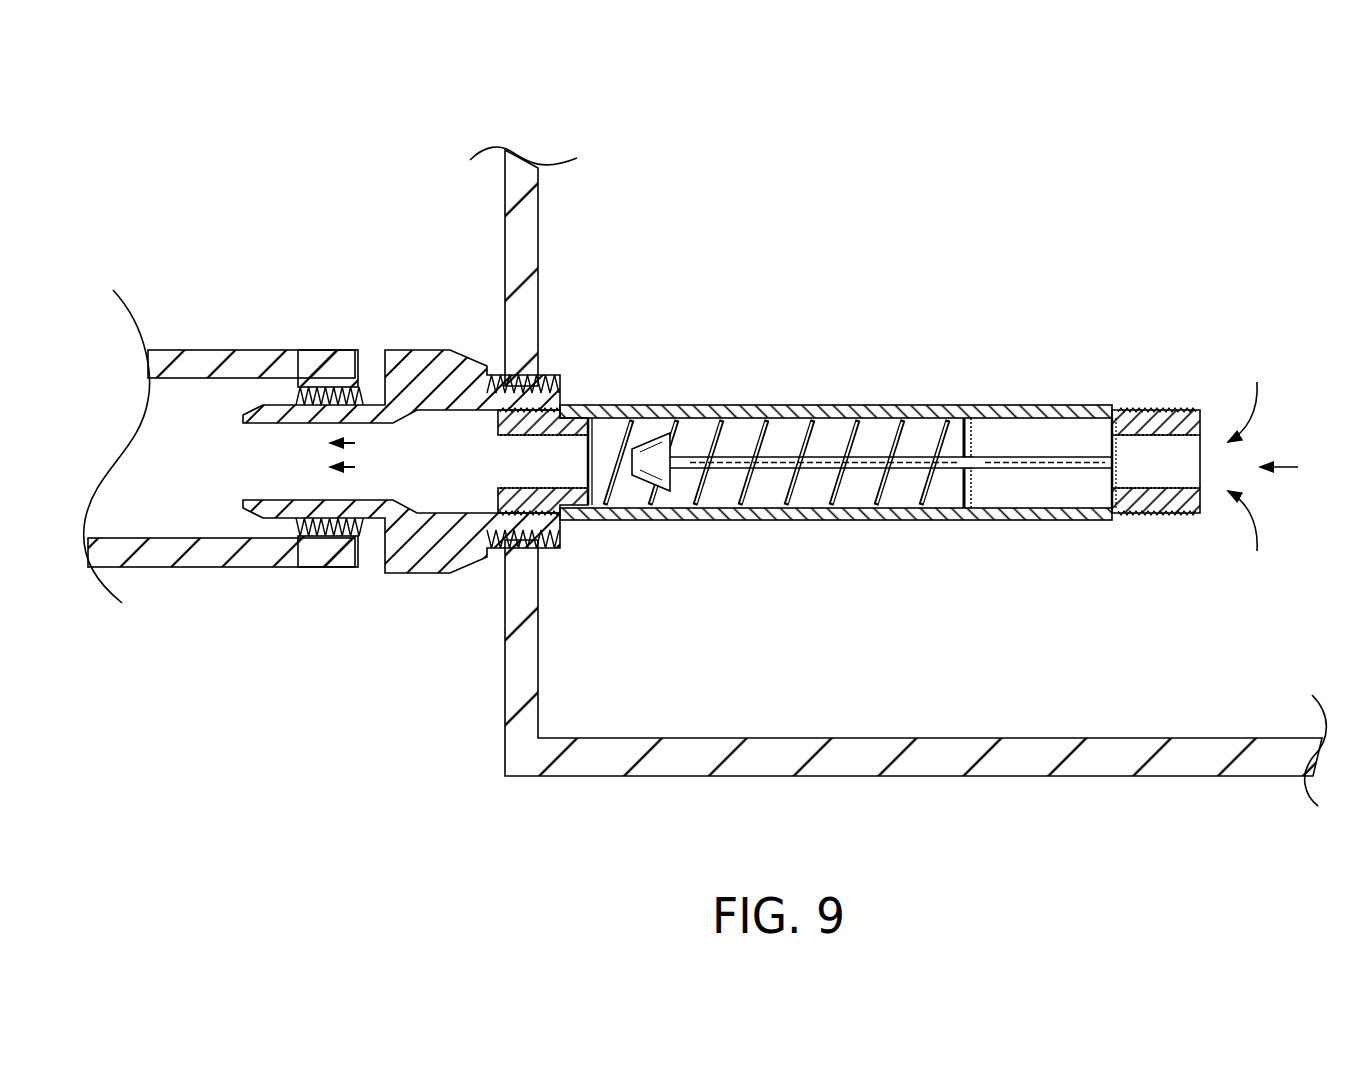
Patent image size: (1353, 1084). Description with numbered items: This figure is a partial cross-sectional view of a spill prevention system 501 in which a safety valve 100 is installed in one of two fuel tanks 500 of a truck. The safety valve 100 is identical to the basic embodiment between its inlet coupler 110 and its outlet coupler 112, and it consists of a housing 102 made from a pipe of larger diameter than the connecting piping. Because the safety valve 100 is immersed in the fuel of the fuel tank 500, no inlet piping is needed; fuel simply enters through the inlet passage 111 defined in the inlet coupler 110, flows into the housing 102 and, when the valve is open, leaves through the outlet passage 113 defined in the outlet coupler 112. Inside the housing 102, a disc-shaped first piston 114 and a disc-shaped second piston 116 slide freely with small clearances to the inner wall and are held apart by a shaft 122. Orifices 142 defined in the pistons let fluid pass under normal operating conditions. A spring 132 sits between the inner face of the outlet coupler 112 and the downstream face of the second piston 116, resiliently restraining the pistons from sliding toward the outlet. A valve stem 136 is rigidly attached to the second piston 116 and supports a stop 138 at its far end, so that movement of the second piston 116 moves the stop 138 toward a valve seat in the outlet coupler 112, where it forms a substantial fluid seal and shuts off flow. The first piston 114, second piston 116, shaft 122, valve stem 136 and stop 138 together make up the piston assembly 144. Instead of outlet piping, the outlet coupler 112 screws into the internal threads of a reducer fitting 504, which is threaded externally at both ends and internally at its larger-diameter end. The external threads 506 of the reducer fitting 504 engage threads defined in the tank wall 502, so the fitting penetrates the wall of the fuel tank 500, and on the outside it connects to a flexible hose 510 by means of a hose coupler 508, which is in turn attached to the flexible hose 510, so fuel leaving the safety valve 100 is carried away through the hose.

The safety valve 100 is at (901, 386).
The housing 102 is at (950, 408).
The inlet coupler 110 is at (1162, 418).
The inlet passage 111 is at (1154, 478).
The outlet coupler 112 is at (573, 415).
The outlet passage 113 is at (560, 473).
The first piston 114 is at (1118, 466).
The second piston 116 is at (977, 495).
The shaft 122 is at (983, 458).
The spring 132 is at (848, 440).
The valve stem 136 is at (753, 455).
The stop 138 is at (679, 434).
The orifices 142 is at (973, 482).
The piston assembly 144 is at (1065, 436).
The fuel tank 500 is at (523, 240).
The spill prevention system 501 is at (317, 196).
The tank wall 502 is at (512, 187).
The reducer fitting 504 is at (450, 358).
The fitting threads 506 is at (541, 386).
The hose coupler 508 is at (337, 357).
The flexible hose 510 is at (240, 560).